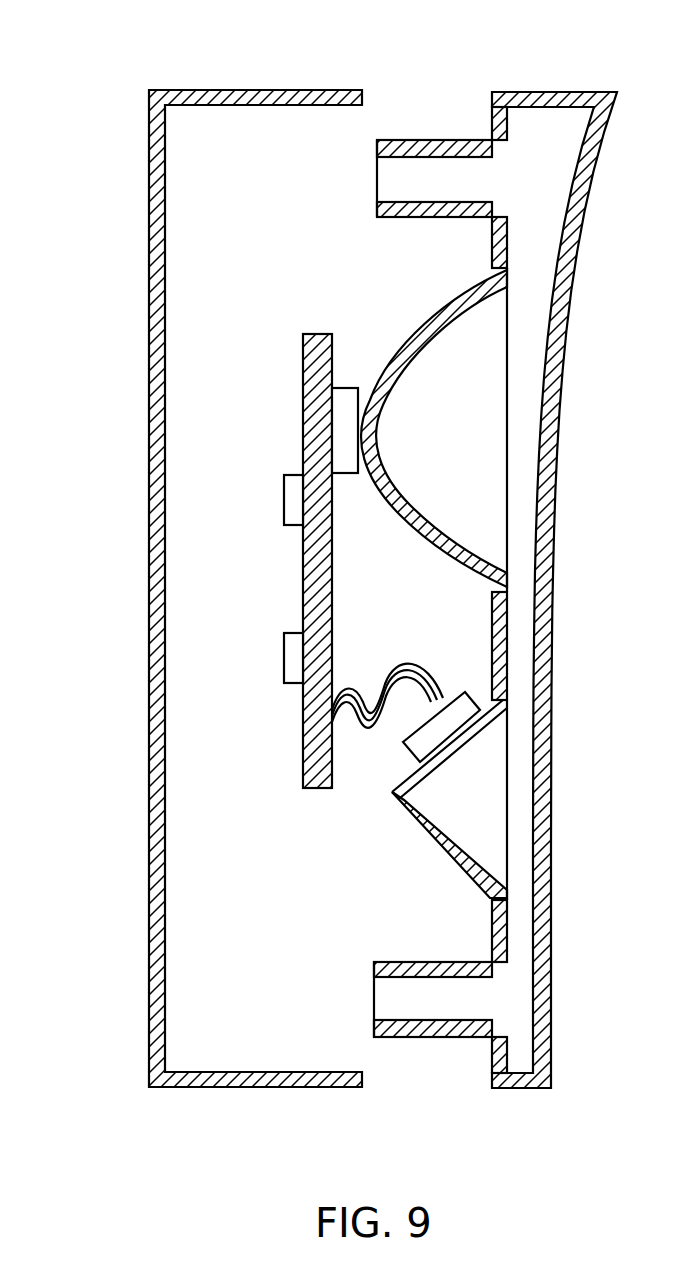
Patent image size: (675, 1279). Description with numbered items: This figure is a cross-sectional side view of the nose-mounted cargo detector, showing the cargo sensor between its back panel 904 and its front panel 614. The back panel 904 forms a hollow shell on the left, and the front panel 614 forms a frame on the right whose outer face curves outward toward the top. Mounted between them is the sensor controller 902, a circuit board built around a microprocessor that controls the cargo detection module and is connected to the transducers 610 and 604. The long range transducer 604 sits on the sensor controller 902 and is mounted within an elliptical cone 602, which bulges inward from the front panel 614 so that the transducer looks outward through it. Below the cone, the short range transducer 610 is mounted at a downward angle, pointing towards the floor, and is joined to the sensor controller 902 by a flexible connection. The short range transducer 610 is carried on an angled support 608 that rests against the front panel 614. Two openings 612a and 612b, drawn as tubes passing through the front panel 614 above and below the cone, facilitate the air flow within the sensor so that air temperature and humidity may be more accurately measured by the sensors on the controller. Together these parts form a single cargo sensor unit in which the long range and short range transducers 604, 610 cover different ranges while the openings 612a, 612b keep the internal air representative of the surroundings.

The back panel 904 is at (149, 497).
The front panel 614 is at (534, 92).
The opening 612a is at (377, 178).
The opening 612b is at (375, 1000).
The elliptical cone 602 is at (438, 309).
The sensor controller 902 is at (303, 392).
The long range transducer 604 is at (343, 471).
The short range transducer 610 is at (453, 692).
The sensor module 608 is at (412, 820).